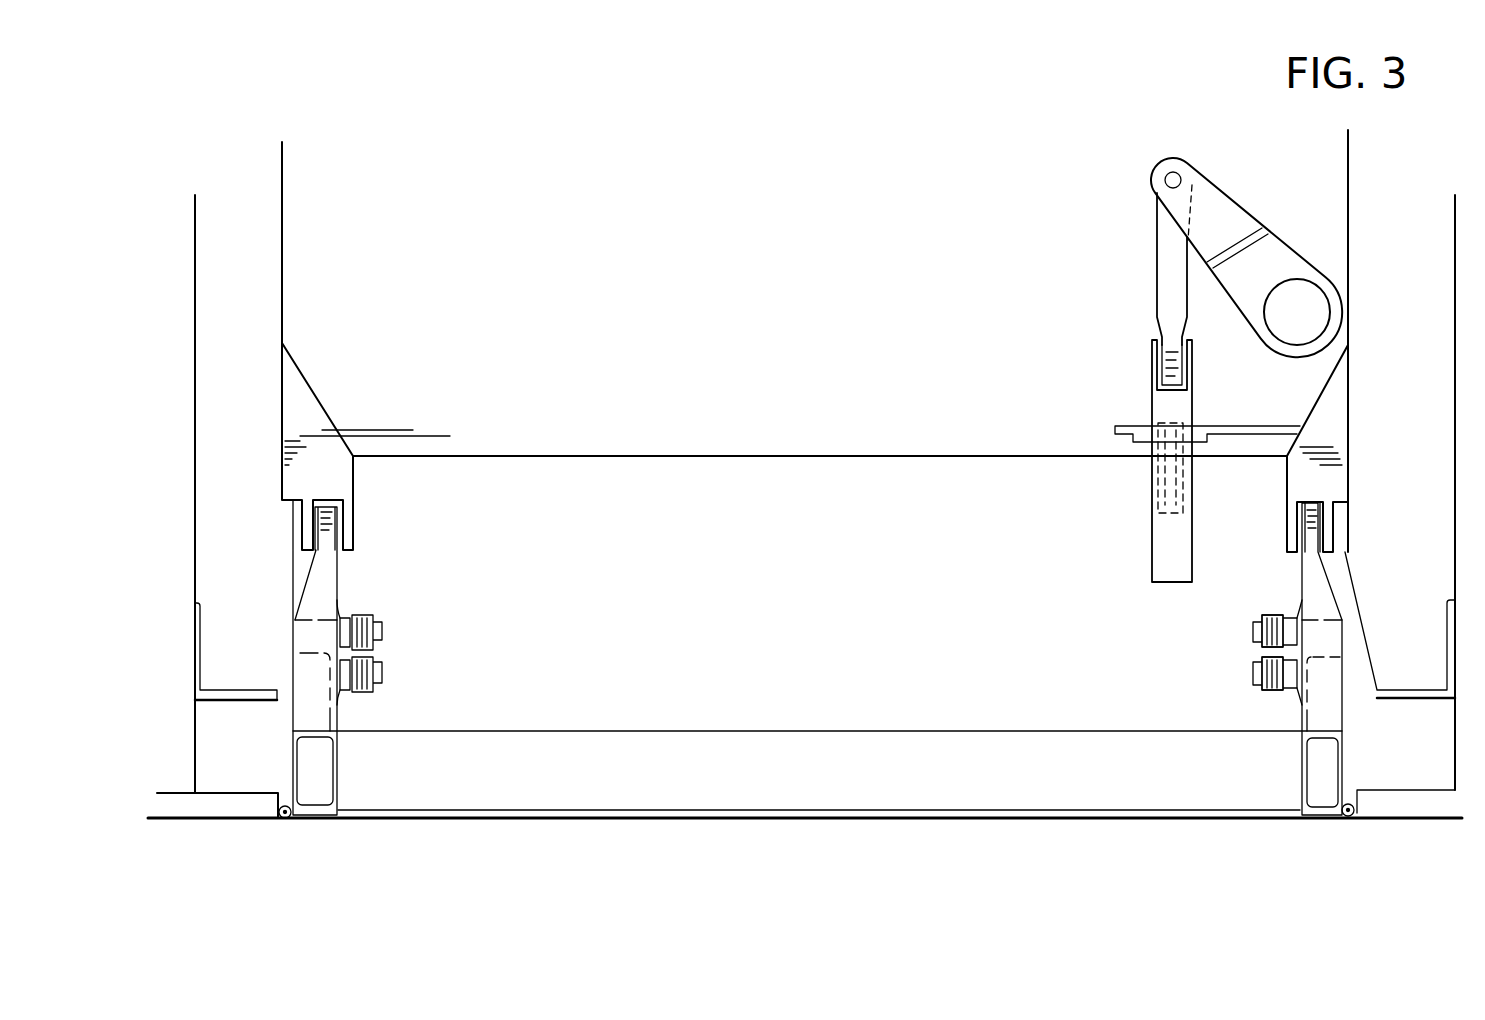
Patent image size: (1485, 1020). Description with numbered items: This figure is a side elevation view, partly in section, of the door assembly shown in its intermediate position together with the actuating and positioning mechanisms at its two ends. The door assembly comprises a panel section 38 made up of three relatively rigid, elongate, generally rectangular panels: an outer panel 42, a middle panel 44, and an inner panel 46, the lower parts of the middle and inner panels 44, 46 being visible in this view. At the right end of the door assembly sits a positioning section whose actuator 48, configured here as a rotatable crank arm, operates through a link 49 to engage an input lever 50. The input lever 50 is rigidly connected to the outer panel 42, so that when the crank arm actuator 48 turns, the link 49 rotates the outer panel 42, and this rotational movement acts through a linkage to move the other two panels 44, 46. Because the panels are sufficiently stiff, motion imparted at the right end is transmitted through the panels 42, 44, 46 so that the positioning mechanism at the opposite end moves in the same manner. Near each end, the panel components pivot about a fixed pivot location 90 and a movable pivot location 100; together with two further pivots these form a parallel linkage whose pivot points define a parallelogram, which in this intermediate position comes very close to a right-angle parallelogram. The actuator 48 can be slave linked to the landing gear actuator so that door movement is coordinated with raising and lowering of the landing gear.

The panel section 38 is at (672, 820).
The outer panel 42 is at (1128, 716).
The middle panel 44 is at (1133, 793).
The inner panel 46 is at (1220, 820).
The actuator 48 is at (1222, 207).
The link 49 is at (1167, 257).
The input lever 50 is at (1158, 405).
The fixed pivot location 90 is at (1253, 628).
The pivot location 100 is at (1253, 667).